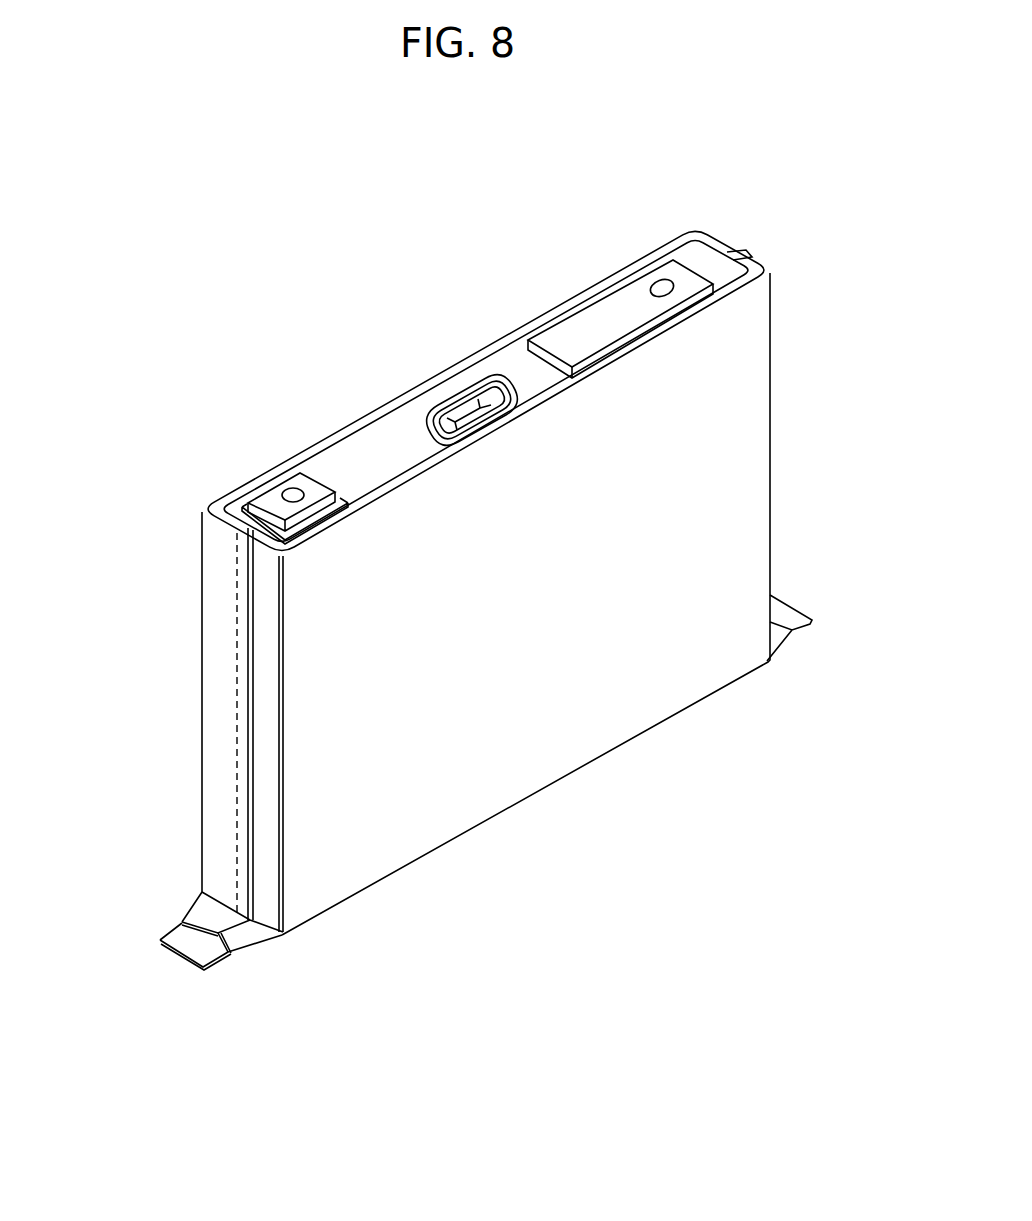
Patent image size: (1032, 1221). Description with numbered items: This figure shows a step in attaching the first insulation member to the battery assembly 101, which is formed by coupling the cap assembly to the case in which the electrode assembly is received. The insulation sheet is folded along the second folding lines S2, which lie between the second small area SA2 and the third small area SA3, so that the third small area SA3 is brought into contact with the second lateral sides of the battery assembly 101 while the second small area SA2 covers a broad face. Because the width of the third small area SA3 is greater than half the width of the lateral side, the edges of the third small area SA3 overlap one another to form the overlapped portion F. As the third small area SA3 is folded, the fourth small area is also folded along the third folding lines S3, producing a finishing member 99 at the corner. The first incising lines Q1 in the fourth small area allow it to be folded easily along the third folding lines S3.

The battery assembly 101 is at (383, 460).
The overlapped portion F is at (243, 575).
The third small area SA3 is at (215, 647).
The second small area SA2 is at (515, 775).
The second folding line S2 is at (283, 827).
The third folding line S3 is at (192, 900).
The first incising line Q1 is at (160, 940).
The finishing member 99 is at (240, 959).